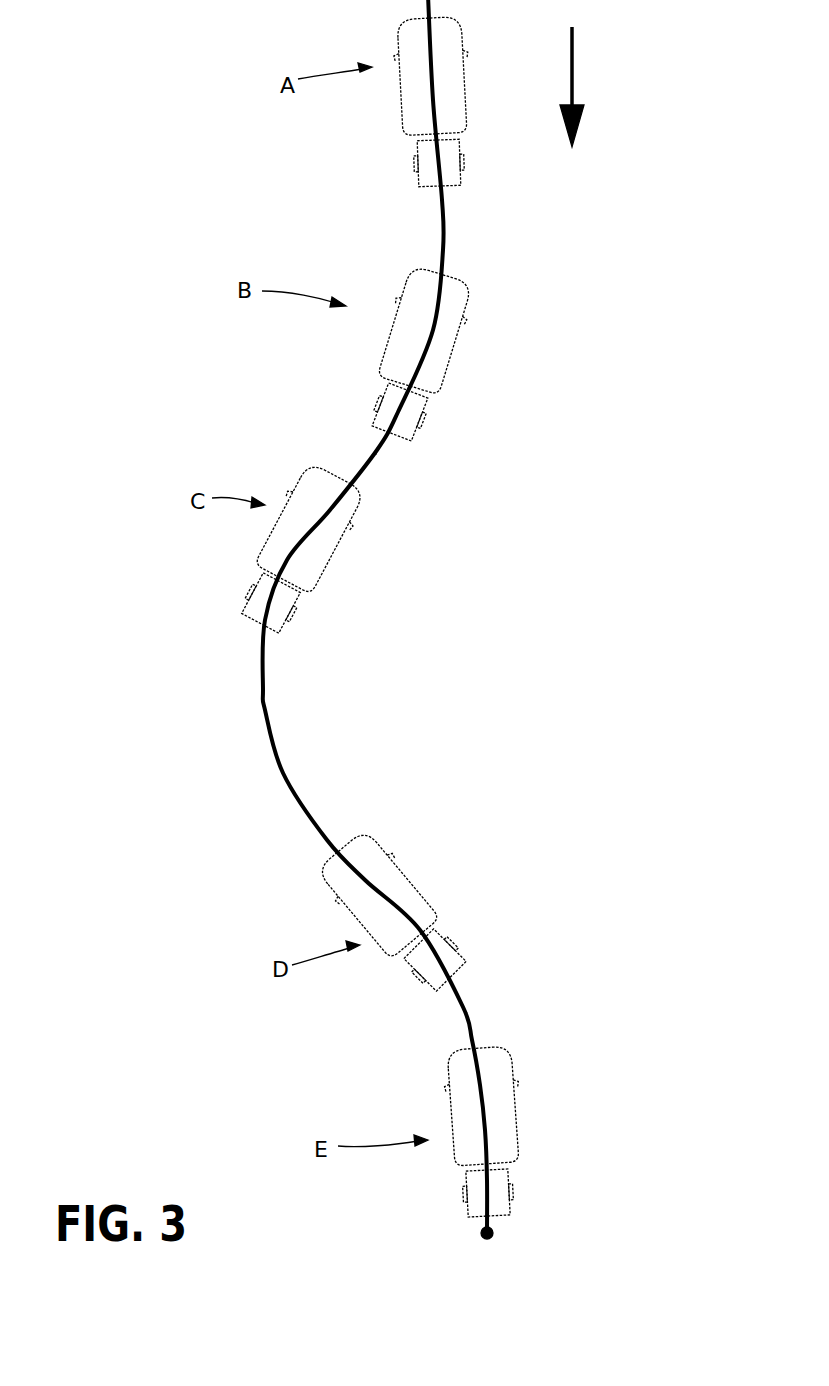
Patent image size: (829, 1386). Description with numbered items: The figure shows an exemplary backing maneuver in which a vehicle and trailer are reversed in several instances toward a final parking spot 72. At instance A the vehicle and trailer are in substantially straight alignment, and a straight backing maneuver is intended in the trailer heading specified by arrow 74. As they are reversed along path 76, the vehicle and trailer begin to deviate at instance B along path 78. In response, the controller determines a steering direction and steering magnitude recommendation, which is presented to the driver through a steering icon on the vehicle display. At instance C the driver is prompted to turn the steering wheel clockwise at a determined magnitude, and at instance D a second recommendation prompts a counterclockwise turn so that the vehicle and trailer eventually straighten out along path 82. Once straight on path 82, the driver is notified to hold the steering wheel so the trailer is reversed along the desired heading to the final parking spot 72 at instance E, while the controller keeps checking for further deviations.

The final parking spot 72 is at (492, 1236).
The arrow 74 is at (577, 55).
The path 76 is at (445, 228).
The path 78 is at (377, 452).
The path 82 is at (465, 1010).